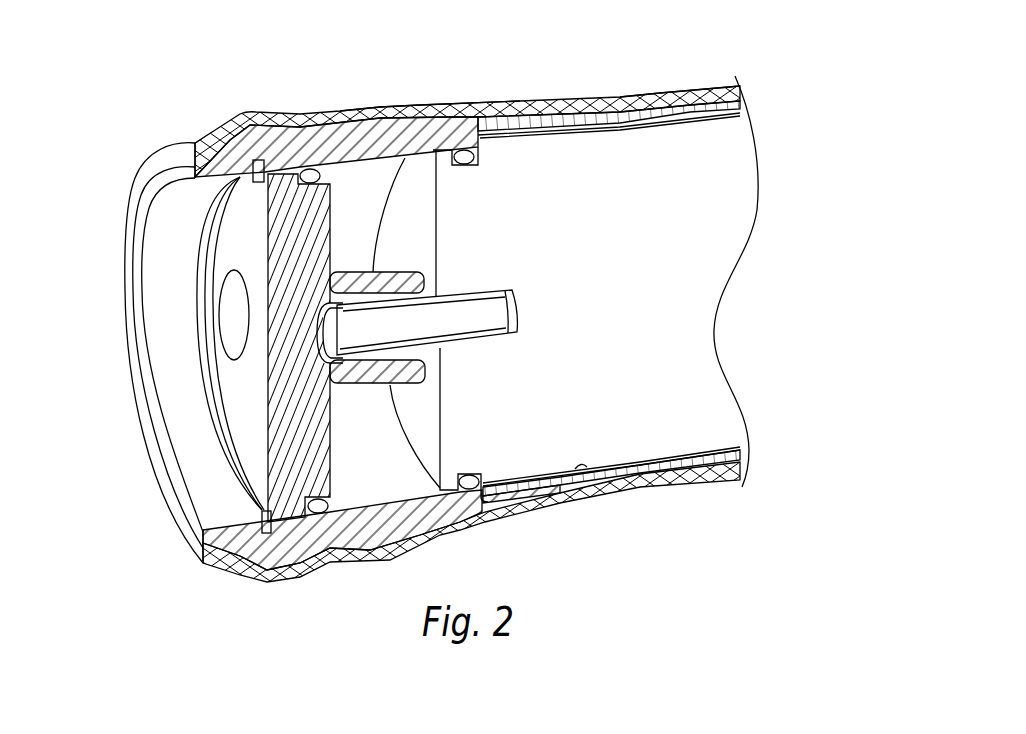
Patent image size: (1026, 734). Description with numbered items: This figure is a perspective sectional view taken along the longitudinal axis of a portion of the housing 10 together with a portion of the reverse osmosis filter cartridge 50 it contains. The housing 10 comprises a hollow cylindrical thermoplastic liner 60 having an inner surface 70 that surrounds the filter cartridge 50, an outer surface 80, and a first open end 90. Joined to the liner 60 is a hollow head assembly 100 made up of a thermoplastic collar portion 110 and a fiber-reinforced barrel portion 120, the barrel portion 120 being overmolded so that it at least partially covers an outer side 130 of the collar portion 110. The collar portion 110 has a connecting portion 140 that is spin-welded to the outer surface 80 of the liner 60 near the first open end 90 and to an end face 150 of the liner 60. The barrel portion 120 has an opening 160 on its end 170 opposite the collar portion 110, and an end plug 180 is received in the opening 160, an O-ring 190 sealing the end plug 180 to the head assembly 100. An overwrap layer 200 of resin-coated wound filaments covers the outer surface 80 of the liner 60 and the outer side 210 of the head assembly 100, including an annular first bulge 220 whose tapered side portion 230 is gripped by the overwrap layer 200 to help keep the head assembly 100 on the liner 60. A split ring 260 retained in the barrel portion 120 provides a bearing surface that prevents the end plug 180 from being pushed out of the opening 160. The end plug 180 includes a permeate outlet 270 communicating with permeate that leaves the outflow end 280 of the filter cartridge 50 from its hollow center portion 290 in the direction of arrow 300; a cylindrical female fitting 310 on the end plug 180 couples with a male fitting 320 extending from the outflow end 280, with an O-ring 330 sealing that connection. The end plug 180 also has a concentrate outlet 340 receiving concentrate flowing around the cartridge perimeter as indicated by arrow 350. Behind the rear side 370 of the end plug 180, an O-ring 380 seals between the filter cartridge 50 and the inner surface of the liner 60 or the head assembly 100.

The housing 10 is at (450, 85).
The reverse osmosis filter cartridge 50 is at (617, 310).
The liner 60 is at (637, 473).
The inner surface 70 is at (583, 472).
The outer surface 80 is at (697, 475).
The first open end 90 is at (490, 522).
The head assembly 100 is at (389, 106).
The collar portion 110 is at (563, 134).
The barrel portion 120 is at (408, 146).
The outer side 130 is at (506, 117).
The connecting portion 140 is at (536, 134).
The end face 150 is at (477, 155).
The opening 160 is at (178, 428).
The end 170 is at (155, 203).
The end plug 180 is at (223, 256).
The O-ring 190 is at (341, 536).
The overwrap layer 200 is at (690, 88).
The outer side 210 is at (311, 112).
The first bulge 220 is at (248, 111).
The tapered side portion 230 is at (210, 143).
The split ring 260 is at (243, 490).
The permeate outlet 270 is at (277, 352).
The outflow end 280 is at (418, 410).
The hollow center portion 290 is at (463, 337).
The arrow 300 is at (352, 338).
The female fitting 310 is at (363, 265).
The male fitting 320 is at (363, 374).
The O-ring 330 is at (464, 425).
The concentrate outlet 340 is at (230, 315).
The arrow 350 is at (362, 237).
The rear side 370 is at (338, 458).
The O-ring 380 is at (466, 491).